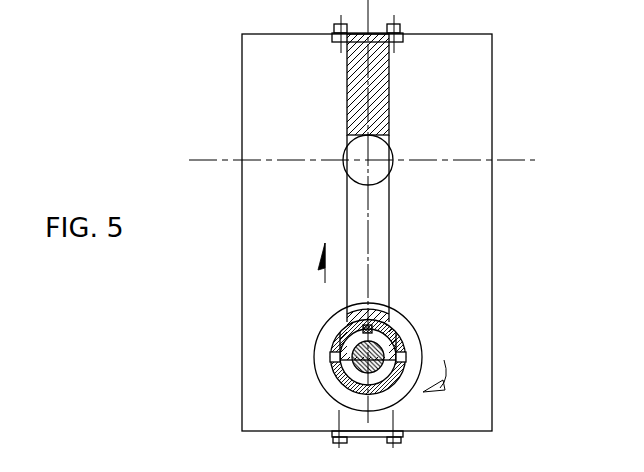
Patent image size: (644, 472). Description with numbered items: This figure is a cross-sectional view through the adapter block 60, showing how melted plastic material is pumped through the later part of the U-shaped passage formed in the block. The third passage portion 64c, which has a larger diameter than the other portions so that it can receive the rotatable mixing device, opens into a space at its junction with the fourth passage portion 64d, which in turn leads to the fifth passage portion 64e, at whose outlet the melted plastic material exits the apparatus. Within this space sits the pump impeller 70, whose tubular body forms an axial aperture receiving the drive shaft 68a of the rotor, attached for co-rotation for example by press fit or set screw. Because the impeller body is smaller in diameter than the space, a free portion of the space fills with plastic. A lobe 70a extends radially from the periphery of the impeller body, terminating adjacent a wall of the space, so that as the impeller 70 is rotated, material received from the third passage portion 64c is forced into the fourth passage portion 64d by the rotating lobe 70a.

The adapter block 60 is at (254, 65).
The fifth passage portion 64e is at (388, 153).
The fourth passage portion 64d is at (383, 238).
The lobe 70a is at (388, 313).
The drive shaft 68a is at (373, 352).
The pump impeller 70 is at (403, 367).
The third passage portion 64c is at (388, 398).